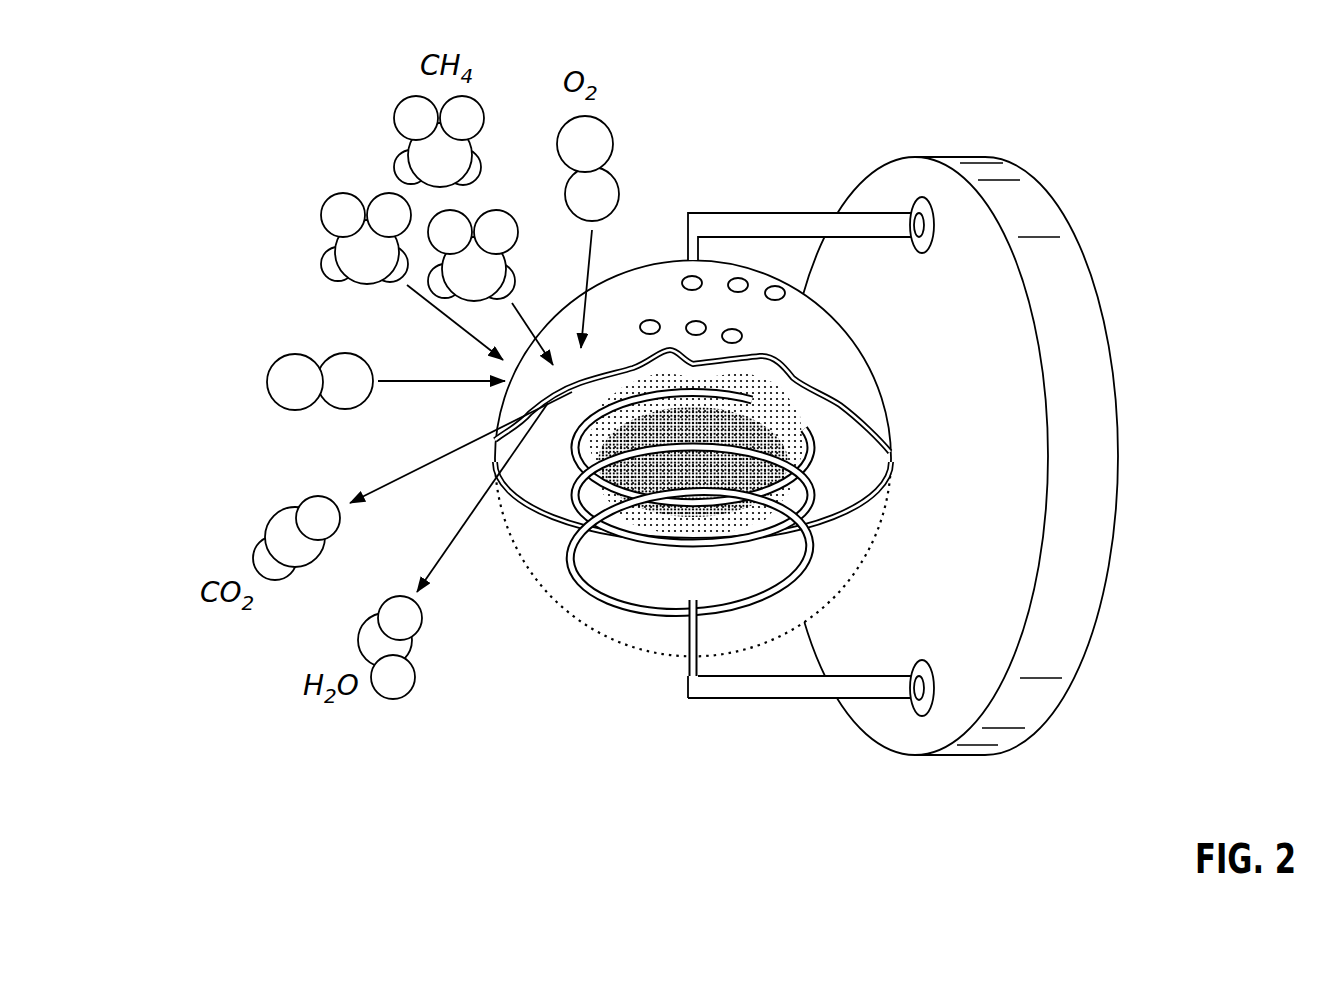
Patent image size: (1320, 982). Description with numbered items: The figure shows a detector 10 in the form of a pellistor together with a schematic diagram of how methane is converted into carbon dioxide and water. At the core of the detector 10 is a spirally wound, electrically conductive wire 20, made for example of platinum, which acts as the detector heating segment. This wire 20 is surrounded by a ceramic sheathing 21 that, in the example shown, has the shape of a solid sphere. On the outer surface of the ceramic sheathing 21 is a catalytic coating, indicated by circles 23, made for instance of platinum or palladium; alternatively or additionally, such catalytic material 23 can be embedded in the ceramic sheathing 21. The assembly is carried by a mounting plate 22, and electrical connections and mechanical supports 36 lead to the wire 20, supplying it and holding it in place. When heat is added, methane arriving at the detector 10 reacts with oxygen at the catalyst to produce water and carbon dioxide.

The detector 10 is at (188, 331).
The spirally wound electrically conductive wire 20 is at (598, 608).
The ceramic sheathing 21 is at (835, 358).
The mounting plate 22 is at (1087, 426).
The catalytic coating 23 is at (775, 290).
The electrical connections and mechanical supports 36 is at (761, 213).